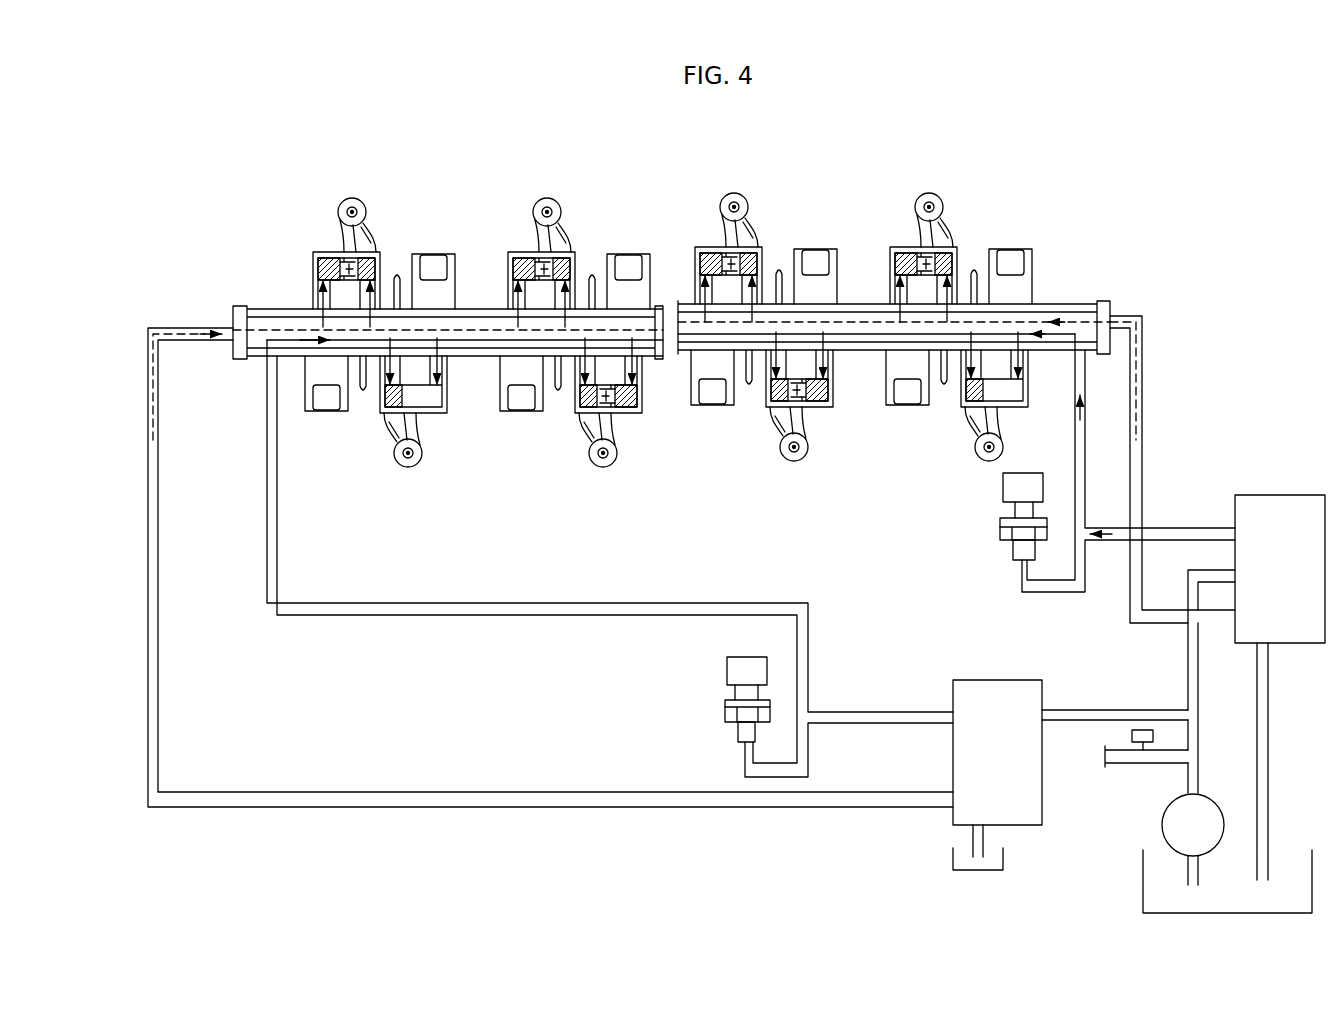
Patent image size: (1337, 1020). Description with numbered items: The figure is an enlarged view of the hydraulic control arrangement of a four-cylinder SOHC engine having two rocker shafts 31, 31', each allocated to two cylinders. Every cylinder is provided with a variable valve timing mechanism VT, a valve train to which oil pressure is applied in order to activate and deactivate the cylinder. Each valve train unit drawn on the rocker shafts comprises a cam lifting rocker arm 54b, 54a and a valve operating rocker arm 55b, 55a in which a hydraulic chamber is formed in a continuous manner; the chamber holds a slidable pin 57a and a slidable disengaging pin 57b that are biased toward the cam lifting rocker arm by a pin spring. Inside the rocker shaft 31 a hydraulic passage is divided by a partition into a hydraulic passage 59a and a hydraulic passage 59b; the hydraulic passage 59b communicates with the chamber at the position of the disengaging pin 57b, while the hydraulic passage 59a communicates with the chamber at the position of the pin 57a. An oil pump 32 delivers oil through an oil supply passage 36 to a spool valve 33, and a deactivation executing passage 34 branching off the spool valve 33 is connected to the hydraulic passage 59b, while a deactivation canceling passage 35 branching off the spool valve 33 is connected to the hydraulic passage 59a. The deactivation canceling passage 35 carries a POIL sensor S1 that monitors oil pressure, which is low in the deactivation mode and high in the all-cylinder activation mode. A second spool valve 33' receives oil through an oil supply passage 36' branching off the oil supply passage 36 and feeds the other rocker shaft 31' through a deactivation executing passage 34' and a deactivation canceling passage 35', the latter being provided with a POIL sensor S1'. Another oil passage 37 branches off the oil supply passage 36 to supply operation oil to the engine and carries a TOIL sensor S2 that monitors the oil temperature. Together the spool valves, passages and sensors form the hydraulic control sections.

The rocker shaft 31 is at (898, 262).
The rocker shaft 31' is at (448, 281).
The oil pump 32 is at (1162, 825).
The spool valve 33 is at (1281, 535).
The spool valve 33' is at (978, 742).
The deactivation executing passage 34 is at (1172, 469).
The deactivation executing passage 34' is at (550, 567).
The deactivation canceling passage 35 is at (1128, 463).
The deactivation canceling passage 35' is at (610, 558).
The oil supply passage 36 is at (1218, 681).
The oil supply passage 36' is at (1115, 683).
The oil passage 37 is at (1135, 766).
The cam lifting rocker arm 54a is at (448, 395).
The cam lifting rocker arm 54b is at (313, 268).
The valve operating rocker arm 55a is at (392, 425).
The valve operating rocker arm 55b is at (376, 230).
The pin 57a is at (339, 252).
The disengaging pin 57b is at (318, 256).
The hydraulic passage 59a is at (1049, 337).
The hydraulic passage 59b is at (1040, 318).
The POIL sensor S1 is at (992, 516).
The POIL sensor S1' is at (709, 699).
The TOIL sensor S2 is at (1130, 737).
The variable valve timing mechanism VT is at (364, 194).